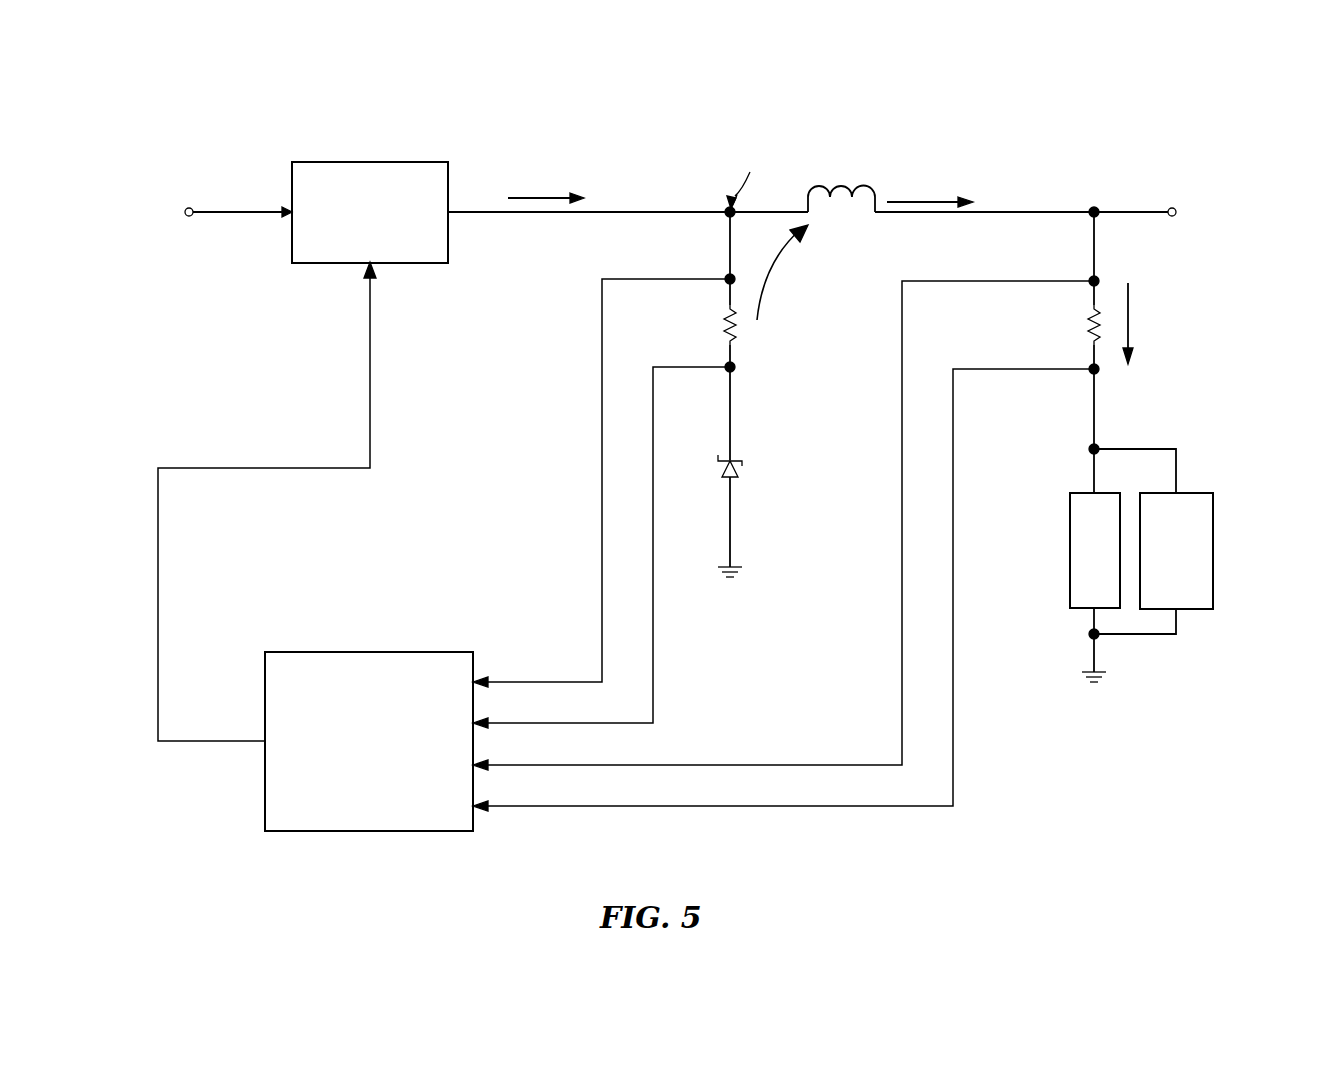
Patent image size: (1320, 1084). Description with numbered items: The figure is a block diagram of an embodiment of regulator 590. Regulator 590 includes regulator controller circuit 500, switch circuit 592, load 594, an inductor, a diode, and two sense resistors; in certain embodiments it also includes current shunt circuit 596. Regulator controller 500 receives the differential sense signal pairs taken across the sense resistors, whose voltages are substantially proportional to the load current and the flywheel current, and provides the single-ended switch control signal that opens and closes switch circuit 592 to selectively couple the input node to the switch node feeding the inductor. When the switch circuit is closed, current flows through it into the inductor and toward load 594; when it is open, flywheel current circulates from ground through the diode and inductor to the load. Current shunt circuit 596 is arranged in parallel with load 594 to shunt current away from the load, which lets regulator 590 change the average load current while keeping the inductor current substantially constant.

The regulator 590 is at (1050, 160).
The switch circuit 592 is at (369, 162).
The regulator controller circuit 500 is at (370, 652).
The load 594 is at (1070, 546).
The current shunt circuit 596 is at (1213, 538).